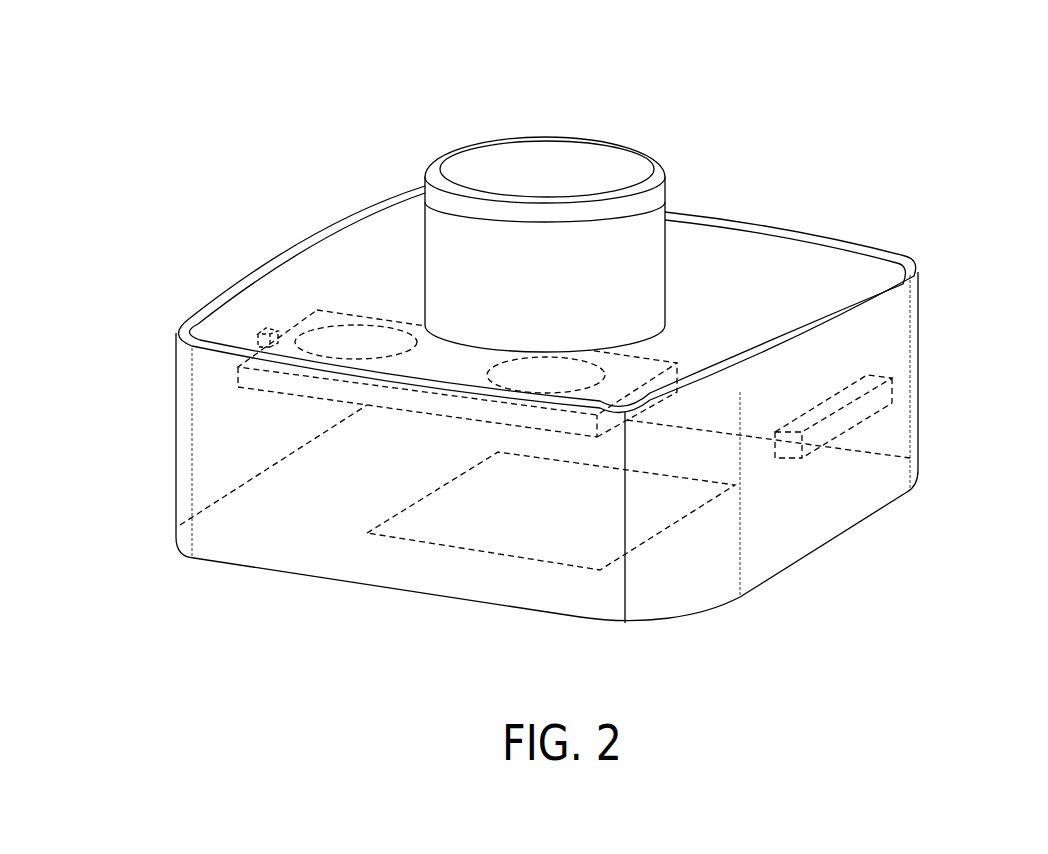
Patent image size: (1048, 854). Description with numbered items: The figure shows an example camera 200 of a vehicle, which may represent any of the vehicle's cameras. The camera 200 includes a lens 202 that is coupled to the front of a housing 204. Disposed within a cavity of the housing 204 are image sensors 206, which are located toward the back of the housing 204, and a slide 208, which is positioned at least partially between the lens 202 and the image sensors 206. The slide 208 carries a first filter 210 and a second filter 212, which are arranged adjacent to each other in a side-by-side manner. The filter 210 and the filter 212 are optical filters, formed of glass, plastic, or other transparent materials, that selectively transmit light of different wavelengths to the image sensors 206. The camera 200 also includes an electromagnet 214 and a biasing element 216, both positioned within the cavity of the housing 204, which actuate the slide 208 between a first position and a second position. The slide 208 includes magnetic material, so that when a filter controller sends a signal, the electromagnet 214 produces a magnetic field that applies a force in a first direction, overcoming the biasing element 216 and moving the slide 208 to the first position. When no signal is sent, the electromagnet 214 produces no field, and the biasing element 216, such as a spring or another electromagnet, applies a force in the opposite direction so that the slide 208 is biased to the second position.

The camera 200 is at (898, 119).
The lens 202 is at (565, 160).
The housing 204 is at (792, 232).
The image sensors 206 is at (491, 552).
The slide 208 is at (238, 372).
The filter 210 is at (510, 377).
The filter 212 is at (351, 343).
The electromagnet 214 is at (892, 390).
The biasing element 216 is at (265, 330).